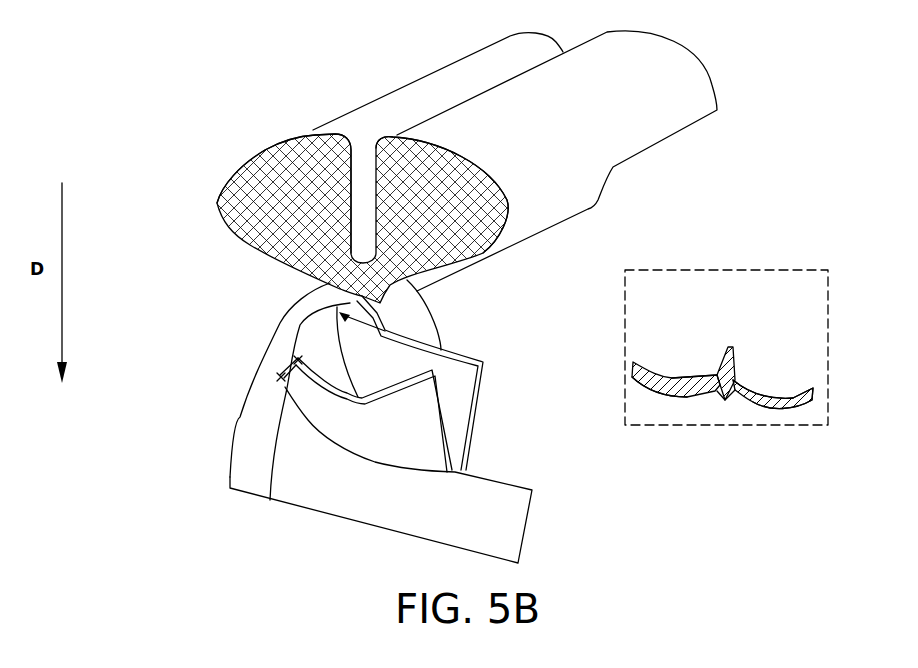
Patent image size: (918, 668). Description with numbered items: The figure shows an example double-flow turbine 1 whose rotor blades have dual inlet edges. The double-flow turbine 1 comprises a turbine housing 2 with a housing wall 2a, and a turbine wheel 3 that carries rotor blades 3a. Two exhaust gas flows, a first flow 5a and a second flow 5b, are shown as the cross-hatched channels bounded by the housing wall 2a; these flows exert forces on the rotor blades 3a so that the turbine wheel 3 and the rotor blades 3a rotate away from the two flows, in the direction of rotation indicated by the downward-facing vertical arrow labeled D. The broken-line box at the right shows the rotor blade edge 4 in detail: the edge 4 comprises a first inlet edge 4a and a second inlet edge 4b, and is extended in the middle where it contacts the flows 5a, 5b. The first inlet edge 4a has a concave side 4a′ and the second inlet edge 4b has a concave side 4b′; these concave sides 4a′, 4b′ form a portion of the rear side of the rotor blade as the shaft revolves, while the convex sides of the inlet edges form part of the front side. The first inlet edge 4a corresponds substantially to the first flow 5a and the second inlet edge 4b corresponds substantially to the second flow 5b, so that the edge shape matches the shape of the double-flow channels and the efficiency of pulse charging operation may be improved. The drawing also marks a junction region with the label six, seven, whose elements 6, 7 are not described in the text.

The double-flow turbine 1 is at (200, 115).
The turbine housing 2 is at (263, 418).
The housing wall 2a is at (250, 245).
The turbine wheel 3 is at (497, 436).
The rotor blades 3a is at (360, 343).
The rotor blade edge 4 is at (730, 347).
The first inlet edge 4a is at (282, 386).
The concave side of the first inlet edge 4a′ is at (697, 369).
The second inlet edge 4b is at (308, 388).
The concave side of the second inlet edge 4b′ is at (758, 384).
The first flow 5a is at (302, 170).
The second flow 5b is at (450, 192).
The seam 6 is at (297, 362).
The weld 7 is at (738, 397).